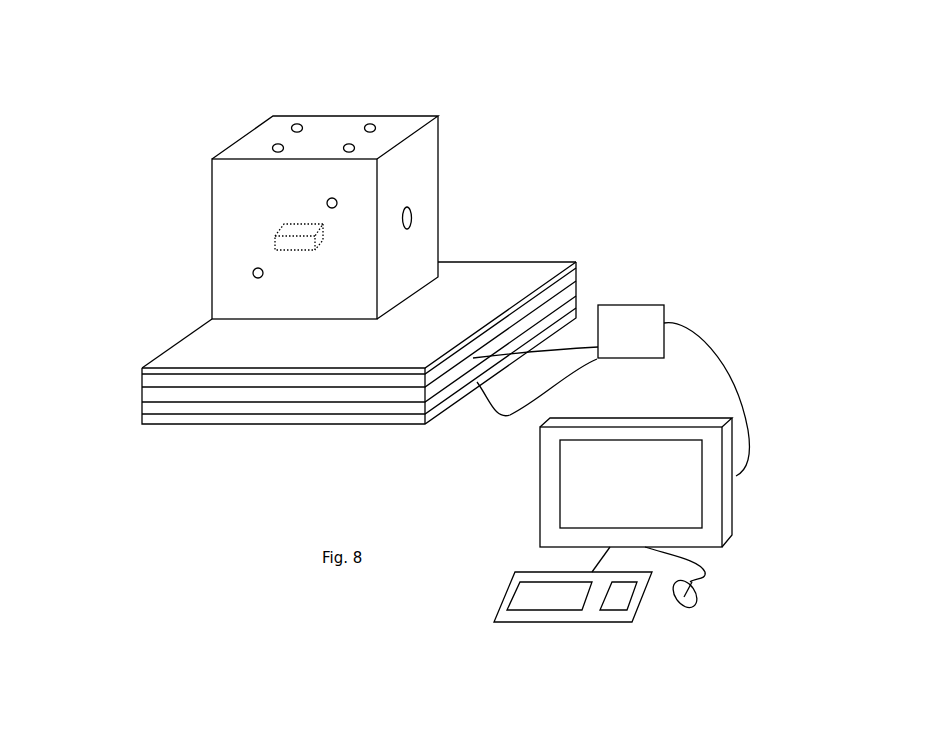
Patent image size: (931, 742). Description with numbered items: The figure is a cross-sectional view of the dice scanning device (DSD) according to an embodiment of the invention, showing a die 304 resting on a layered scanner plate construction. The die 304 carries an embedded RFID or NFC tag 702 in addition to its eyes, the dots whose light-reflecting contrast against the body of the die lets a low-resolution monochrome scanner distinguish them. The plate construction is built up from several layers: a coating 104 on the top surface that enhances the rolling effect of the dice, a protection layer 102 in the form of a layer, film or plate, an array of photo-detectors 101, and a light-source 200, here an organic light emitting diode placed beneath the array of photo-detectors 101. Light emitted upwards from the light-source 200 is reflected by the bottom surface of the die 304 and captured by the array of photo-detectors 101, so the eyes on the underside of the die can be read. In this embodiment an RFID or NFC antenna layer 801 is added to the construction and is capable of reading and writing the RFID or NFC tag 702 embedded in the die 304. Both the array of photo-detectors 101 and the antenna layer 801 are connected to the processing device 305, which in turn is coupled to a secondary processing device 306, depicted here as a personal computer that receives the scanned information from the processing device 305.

The die 304 is at (418, 114).
The RFID or NFC tag 702 is at (300, 222).
The coating 104 is at (560, 266).
The protection layer 102 is at (140, 380).
The array of photo-detectors 101 is at (142, 395).
The light-source 200 is at (140, 407).
The RFID or NFC antenna layer 801 is at (450, 408).
The processing device 305 is at (611, 390).
The secondary processing device 306 is at (538, 538).